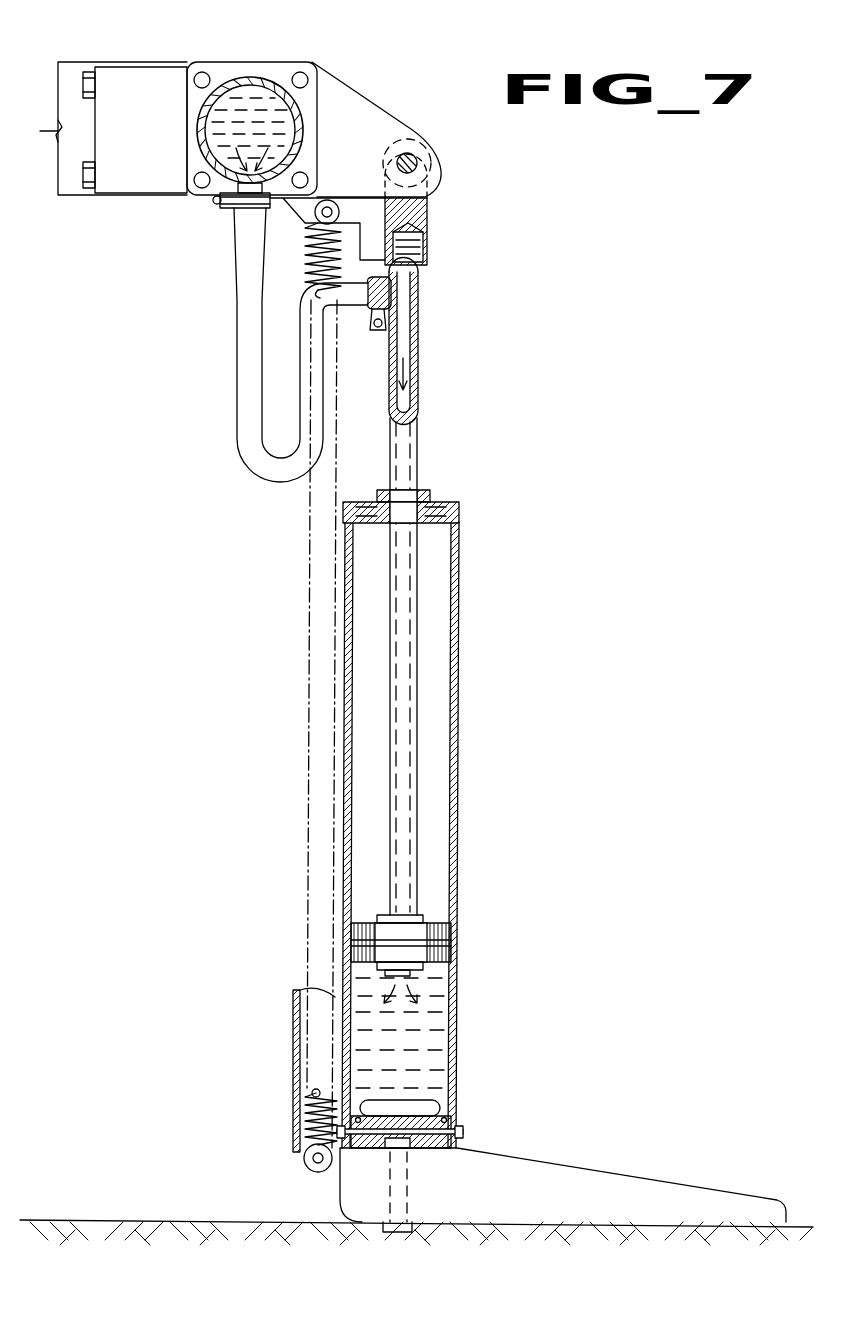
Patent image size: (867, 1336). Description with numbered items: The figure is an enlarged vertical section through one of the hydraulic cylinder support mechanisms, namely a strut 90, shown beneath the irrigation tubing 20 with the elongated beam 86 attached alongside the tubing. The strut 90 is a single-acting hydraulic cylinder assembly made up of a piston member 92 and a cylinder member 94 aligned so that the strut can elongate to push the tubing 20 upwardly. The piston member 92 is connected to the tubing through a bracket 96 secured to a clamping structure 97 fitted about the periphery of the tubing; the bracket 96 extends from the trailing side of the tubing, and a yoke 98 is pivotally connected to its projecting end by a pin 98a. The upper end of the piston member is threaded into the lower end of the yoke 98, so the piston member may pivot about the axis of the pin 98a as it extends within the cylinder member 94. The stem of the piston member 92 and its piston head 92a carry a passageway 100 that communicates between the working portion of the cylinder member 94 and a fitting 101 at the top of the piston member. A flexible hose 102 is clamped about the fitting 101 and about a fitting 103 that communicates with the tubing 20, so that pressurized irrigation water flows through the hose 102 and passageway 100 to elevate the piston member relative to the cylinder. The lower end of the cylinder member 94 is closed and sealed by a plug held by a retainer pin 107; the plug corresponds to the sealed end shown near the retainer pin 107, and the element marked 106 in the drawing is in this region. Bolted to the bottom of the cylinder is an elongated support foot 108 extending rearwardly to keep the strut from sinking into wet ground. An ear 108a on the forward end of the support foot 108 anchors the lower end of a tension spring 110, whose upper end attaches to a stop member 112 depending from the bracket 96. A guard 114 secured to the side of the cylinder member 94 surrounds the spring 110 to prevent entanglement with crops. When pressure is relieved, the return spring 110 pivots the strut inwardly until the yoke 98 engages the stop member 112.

The elongated beam 86 is at (58, 131).
The clamping structure 97 is at (233, 67).
The irrigation tubing 20 is at (273, 87).
The fitting 103 is at (218, 191).
The flexible hose 102 is at (240, 376).
The stop member 112 is at (368, 208).
The bracket 96 is at (372, 113).
The pin 98a is at (417, 159).
The yoke 98 is at (418, 206).
The tension spring 110 is at (312, 267).
The fitting 101 is at (410, 288).
The passageway 100 is at (401, 348).
The piston member 92 is at (416, 423).
The cylinder member 94 is at (455, 700).
The piston head 92a is at (449, 931).
The strut 90 is at (507, 576).
The guard 114 is at (297, 1046).
The ear 108a is at (326, 1176).
The valve fitting 106 is at (441, 1113).
The retainer pin 107 is at (464, 1132).
The support foot 108 is at (527, 1208).